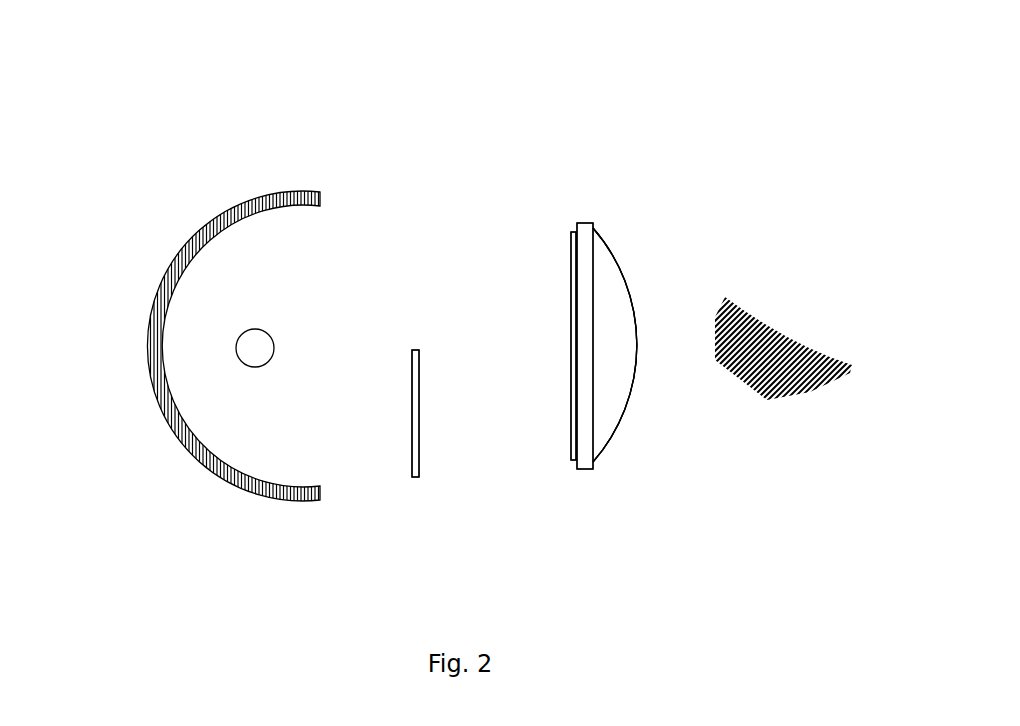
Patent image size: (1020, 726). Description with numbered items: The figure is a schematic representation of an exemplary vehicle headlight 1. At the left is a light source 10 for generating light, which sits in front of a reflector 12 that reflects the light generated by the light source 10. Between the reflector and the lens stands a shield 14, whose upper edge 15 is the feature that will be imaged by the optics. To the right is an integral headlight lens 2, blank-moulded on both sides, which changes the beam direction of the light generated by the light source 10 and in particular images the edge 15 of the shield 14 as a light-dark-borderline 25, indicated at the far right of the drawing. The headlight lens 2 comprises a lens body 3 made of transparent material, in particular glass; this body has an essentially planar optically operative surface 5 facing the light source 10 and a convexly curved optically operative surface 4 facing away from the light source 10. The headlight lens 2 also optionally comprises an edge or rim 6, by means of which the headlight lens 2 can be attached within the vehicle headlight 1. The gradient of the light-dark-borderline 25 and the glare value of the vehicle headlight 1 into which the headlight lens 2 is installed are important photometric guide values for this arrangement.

The vehicle headlight 1 is at (552, 133).
The headlight lens 2 is at (590, 222).
The lens body 3 is at (611, 403).
The convexly curved optically operative surface 4 is at (605, 447).
The planar optically operative surface 5 is at (571, 429).
The rim 6 is at (585, 453).
The light source 10 is at (255, 348).
The reflector 12 is at (248, 217).
The shield 14 is at (416, 448).
The edge of the shield 15 is at (415, 350).
The light-dark-borderline 25 is at (768, 327).